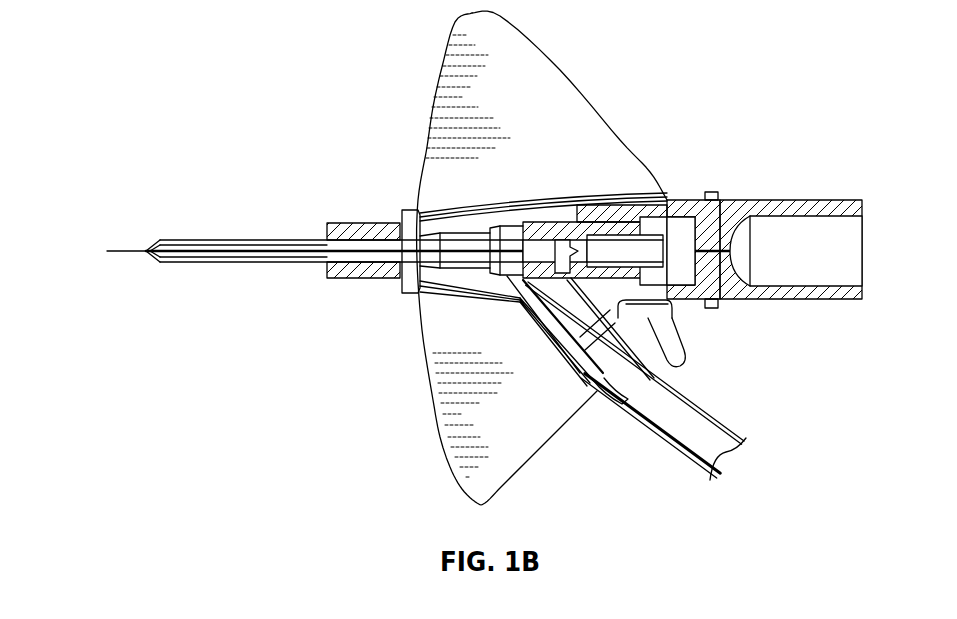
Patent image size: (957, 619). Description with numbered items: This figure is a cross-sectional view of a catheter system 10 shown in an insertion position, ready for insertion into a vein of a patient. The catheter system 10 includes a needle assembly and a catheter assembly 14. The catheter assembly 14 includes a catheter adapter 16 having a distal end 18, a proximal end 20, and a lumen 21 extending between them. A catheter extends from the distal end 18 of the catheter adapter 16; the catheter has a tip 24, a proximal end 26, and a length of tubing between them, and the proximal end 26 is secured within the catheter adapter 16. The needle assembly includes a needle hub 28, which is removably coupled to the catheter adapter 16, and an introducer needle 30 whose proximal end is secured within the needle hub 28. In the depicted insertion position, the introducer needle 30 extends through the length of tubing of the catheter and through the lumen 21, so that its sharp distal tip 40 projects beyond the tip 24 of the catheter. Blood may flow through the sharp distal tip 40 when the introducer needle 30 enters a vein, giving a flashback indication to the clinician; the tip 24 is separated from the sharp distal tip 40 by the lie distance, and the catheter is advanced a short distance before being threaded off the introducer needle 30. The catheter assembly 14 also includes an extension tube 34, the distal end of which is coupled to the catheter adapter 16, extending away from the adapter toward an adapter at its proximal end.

The catheter system 10 is at (203, 47).
The catheter assembly 14 is at (417, 312).
The catheter adapter 16 is at (641, 207).
The distal end 18 is at (327, 230).
The proximal end 20 is at (712, 304).
The lumen 21 is at (563, 233).
The tip 24 is at (145, 218).
The proximal end 26 is at (408, 272).
The needle hub 28 is at (782, 210).
The introducer needle 30 is at (233, 254).
The extension tube 34 is at (681, 446).
The sharp distal tip 40 is at (122, 251).